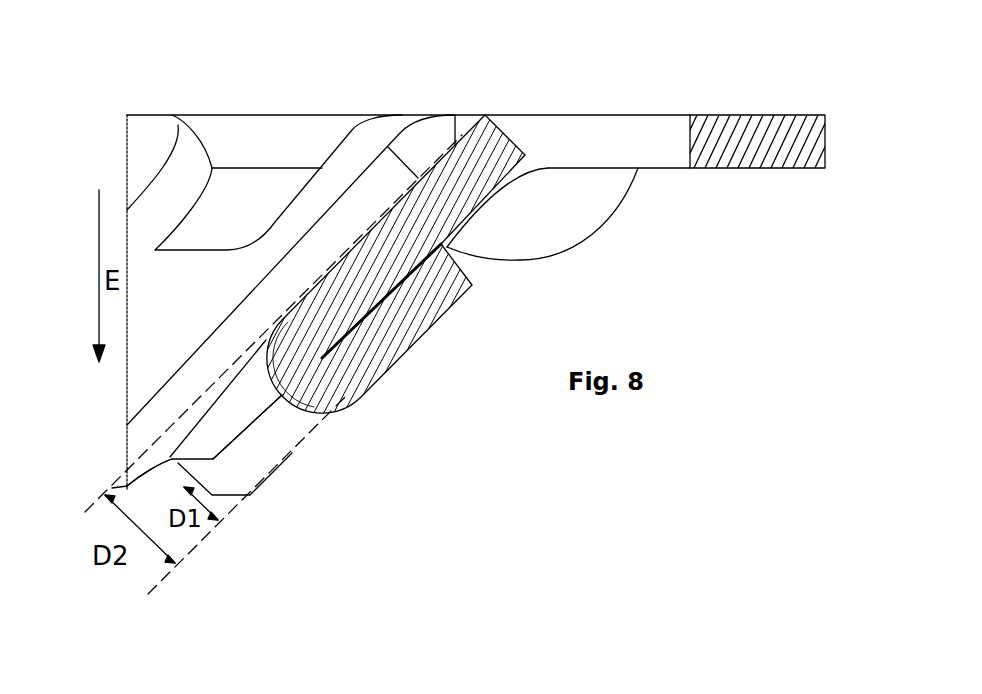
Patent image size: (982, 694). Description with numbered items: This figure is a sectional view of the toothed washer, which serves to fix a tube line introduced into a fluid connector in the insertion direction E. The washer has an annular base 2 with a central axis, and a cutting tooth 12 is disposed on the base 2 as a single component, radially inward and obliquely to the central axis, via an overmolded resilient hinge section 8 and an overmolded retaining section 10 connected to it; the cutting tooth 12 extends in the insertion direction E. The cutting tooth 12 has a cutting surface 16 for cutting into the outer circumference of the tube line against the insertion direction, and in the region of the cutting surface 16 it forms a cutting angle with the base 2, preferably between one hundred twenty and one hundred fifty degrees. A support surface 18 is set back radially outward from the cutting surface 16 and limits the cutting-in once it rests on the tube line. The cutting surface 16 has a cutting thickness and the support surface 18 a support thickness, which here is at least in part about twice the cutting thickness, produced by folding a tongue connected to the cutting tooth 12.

The annular base 2 is at (770, 122).
The resilient hinge section 8 is at (505, 120).
The retaining section 10 is at (442, 247).
The cutting tooth 12 is at (250, 460).
The cutting surface 16 is at (112, 487).
The support surface 18 is at (303, 414).